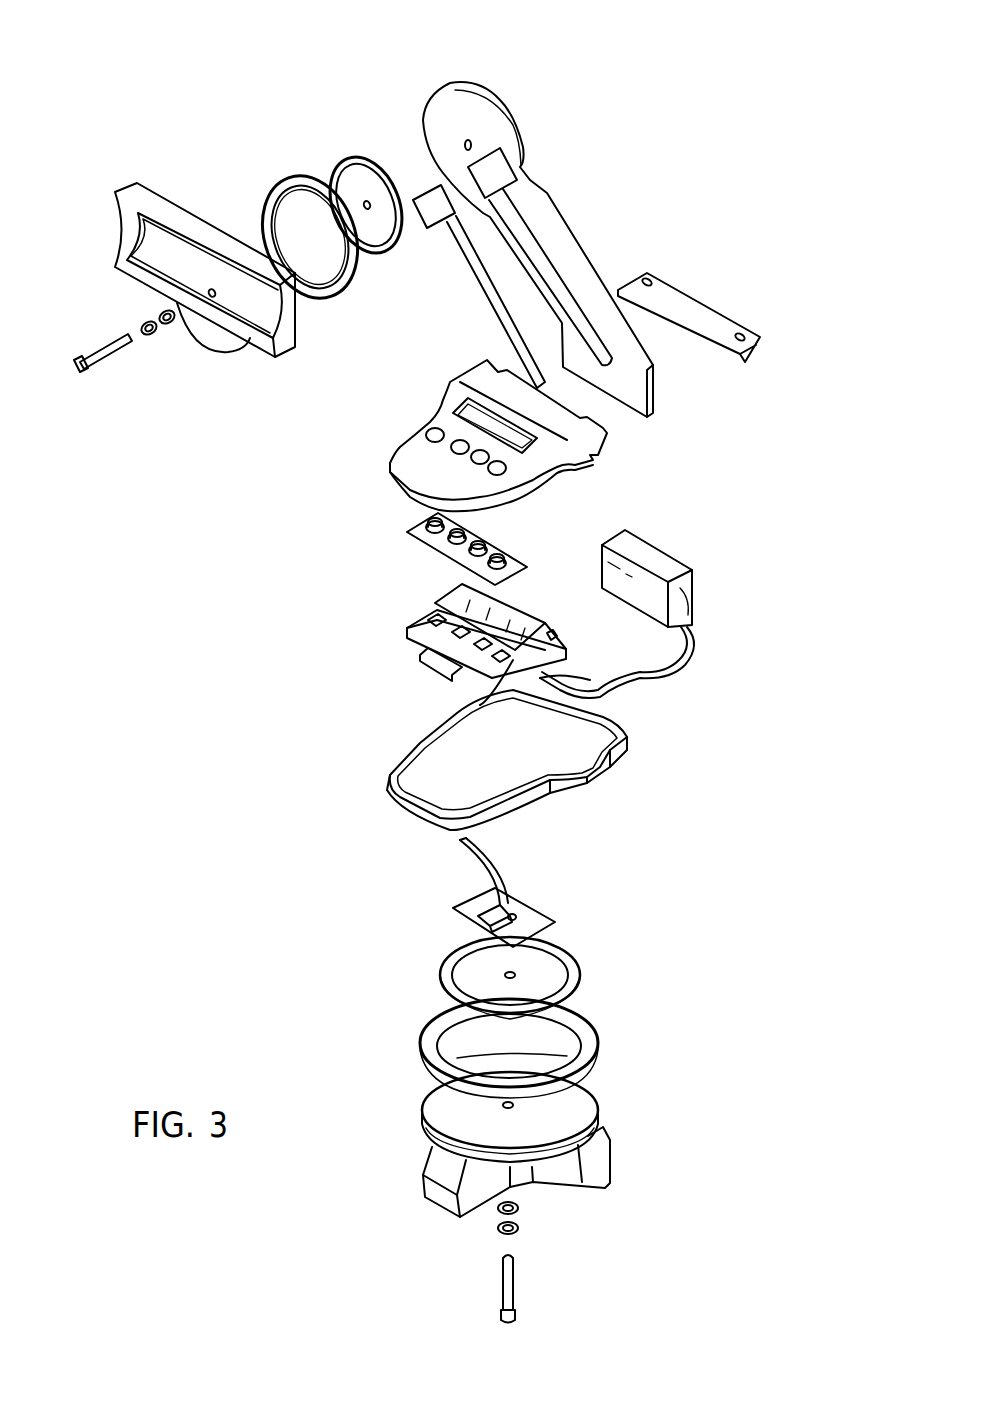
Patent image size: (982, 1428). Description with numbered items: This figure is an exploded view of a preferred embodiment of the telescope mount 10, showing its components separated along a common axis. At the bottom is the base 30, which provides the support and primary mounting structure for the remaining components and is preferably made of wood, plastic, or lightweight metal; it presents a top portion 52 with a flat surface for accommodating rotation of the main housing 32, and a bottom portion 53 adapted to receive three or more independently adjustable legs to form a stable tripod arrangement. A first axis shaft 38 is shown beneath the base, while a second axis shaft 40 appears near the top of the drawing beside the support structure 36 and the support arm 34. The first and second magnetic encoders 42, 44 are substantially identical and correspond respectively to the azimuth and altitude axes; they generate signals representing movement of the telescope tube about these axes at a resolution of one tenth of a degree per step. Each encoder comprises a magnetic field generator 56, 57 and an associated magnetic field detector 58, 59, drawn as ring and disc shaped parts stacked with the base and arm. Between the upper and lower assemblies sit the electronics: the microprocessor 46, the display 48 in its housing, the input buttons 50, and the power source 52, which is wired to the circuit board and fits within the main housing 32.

The mount 10 is at (763, 118).
The base 30 is at (398, 1148).
The main housing 32 is at (352, 765).
The support arm 34 is at (576, 262).
The support structure 36 is at (178, 212).
The first axis shaft 38 is at (503, 1280).
The second axis shaft 40 is at (108, 345).
The first magnetic encoder 42 is at (638, 975).
The second magnetic encoder 44 is at (360, 88).
The microprocessor 46 is at (412, 680).
The display 48 is at (472, 598).
The input buttons 50 is at (400, 505).
The power source 52 is at (665, 562).
The bottom portion 53 is at (582, 1172).
The magnetic field generator 56 is at (348, 166).
The magnetic field generator 57 is at (450, 963).
The magnetic field detector 58 is at (430, 220).
The magnetic field detector 59 is at (545, 917).